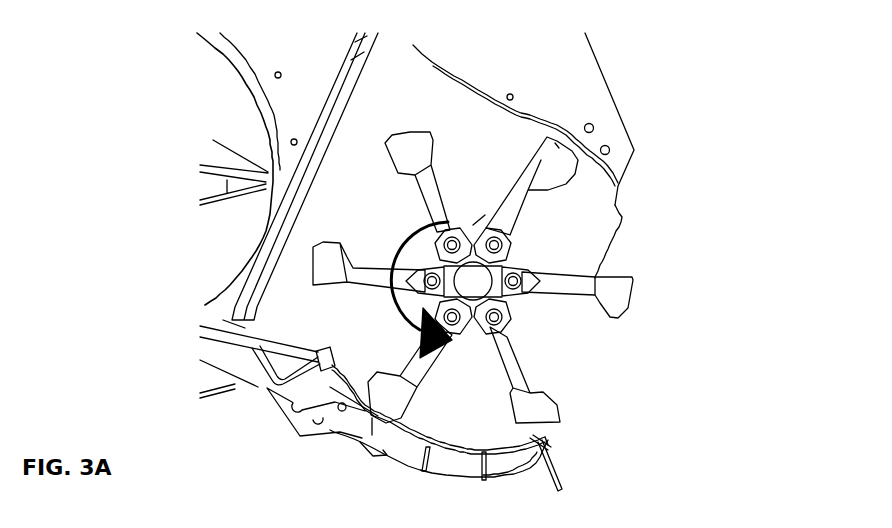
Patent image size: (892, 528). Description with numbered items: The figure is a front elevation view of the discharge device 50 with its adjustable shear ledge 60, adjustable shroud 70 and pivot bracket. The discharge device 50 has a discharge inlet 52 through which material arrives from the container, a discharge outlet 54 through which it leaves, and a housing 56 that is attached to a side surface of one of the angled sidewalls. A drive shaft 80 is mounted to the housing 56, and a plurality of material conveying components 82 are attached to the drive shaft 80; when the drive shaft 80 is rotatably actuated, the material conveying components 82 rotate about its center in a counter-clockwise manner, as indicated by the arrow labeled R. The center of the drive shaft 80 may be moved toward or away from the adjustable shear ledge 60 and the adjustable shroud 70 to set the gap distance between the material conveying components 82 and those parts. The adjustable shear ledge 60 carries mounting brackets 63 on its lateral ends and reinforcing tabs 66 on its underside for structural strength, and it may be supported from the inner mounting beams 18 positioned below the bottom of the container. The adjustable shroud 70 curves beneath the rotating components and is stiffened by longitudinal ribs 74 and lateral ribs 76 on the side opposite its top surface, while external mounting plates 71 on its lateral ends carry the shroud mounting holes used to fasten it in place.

The inner mounting beam 18 is at (258, 385).
The discharge device 50 is at (554, 315).
The discharge inlet 52 is at (350, 143).
The discharge outlet 54 is at (578, 370).
The housing 56 is at (560, 63).
The adjustable shear ledge 60 is at (308, 418).
The mounting bracket 63 is at (303, 420).
The reinforcing tab 66 is at (323, 402).
The adjustable shroud 70 is at (438, 446).
The external mounting plate 71 is at (510, 477).
The longitudinal rib 74 is at (449, 463).
The lateral rib 76 is at (421, 474).
The drive shaft 80 is at (468, 282).
The material conveying component 82 is at (620, 297).